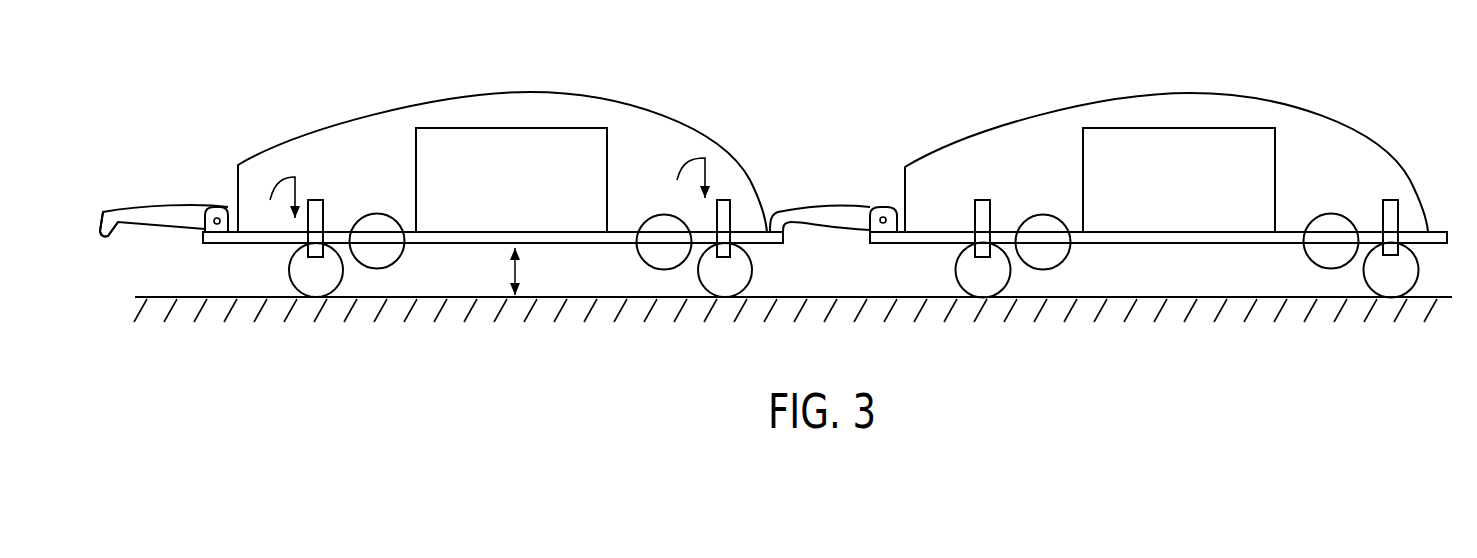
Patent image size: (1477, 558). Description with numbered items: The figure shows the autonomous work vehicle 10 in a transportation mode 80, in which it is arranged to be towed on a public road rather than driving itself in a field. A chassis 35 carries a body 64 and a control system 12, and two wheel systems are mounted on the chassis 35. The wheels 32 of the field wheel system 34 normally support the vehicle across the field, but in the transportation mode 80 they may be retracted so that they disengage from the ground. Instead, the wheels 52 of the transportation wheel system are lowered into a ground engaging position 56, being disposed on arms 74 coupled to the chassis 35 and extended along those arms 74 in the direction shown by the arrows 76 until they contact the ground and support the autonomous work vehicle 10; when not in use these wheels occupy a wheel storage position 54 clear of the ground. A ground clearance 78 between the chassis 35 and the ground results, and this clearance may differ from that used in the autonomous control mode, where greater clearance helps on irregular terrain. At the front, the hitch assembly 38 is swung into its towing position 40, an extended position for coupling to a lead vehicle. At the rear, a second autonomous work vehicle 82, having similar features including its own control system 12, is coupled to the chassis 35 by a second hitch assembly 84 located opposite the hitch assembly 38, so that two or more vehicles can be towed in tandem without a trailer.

The autonomous work vehicle 10 is at (260, 102).
The control system 12 is at (512, 128).
The wheels 32 is at (395, 213).
The field wheel system 34 is at (387, 320).
The chassis 35 is at (215, 238).
The hitch assembly 38 is at (153, 205).
The towing position 40 is at (133, 226).
The wheels 52 is at (292, 283).
The wheel storage position 54 is at (310, 320).
The ground engaging position 56 is at (510, 303).
The body 64 is at (528, 95).
The arms 74 is at (317, 203).
The arrows 76 is at (481, 193).
The ground clearance 78 is at (517, 280).
The transportation mode 80 is at (785, 184).
The second autonomous work vehicle 82 is at (1108, 160).
The second hitch assembly 84 is at (810, 213).